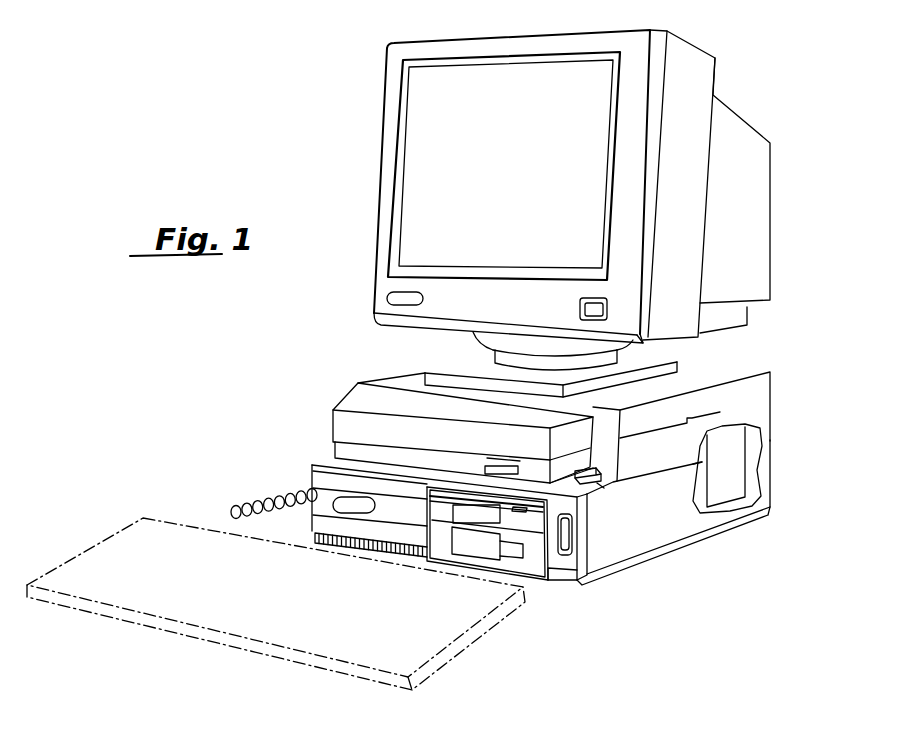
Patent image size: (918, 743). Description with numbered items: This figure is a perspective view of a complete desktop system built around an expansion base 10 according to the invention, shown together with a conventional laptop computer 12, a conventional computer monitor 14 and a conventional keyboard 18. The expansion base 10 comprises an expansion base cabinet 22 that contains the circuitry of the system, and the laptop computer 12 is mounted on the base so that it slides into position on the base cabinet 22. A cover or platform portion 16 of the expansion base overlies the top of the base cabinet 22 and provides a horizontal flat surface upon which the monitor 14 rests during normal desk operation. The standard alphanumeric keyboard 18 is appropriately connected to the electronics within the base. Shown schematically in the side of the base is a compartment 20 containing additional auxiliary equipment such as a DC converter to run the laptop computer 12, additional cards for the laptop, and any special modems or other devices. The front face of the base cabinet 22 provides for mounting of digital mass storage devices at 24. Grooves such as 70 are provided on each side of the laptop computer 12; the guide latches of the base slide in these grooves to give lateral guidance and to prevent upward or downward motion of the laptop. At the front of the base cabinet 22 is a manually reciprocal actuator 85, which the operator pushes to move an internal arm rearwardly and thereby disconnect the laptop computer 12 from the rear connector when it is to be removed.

The expansion base 10 is at (777, 440).
The laptop computer 12 is at (328, 413).
The computer monitor 14 is at (762, 128).
The cover portion 16 is at (723, 372).
The keyboard 18 is at (170, 520).
The compartment 20 is at (730, 481).
The expansion base cabinet 22 is at (667, 527).
The digital mass storage devices 24 is at (443, 512).
The groove 70 is at (600, 462).
The manually reciprocal actuator 85 is at (597, 483).